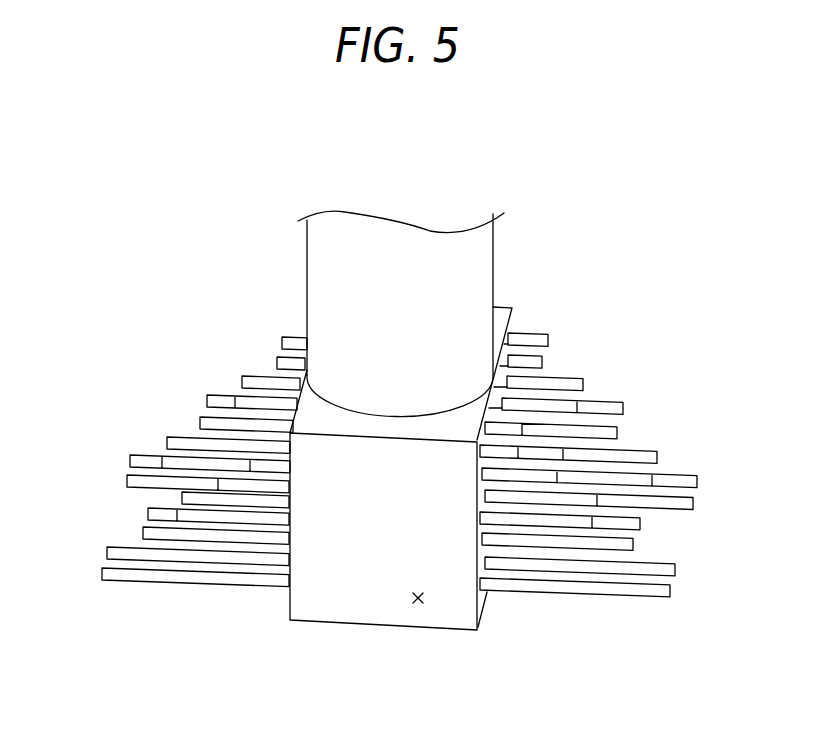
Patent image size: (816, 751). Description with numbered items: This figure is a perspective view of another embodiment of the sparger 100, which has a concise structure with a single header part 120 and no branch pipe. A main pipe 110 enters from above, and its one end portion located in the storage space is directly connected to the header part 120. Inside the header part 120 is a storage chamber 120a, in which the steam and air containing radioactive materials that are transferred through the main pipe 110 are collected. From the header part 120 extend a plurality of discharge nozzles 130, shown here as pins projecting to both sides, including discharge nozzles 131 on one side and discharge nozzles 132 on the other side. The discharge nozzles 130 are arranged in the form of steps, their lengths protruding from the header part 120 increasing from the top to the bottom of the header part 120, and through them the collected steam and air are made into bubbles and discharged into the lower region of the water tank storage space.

The sparger 100 is at (128, 245).
The main pipe 110 is at (398, 240).
The header part 120 is at (331, 613).
The storage chamber 120a is at (416, 602).
The discharge nozzle 130 is at (609, 361).
The first branch discharge nozzles 131 is at (203, 538).
The right pins 132 is at (550, 543).